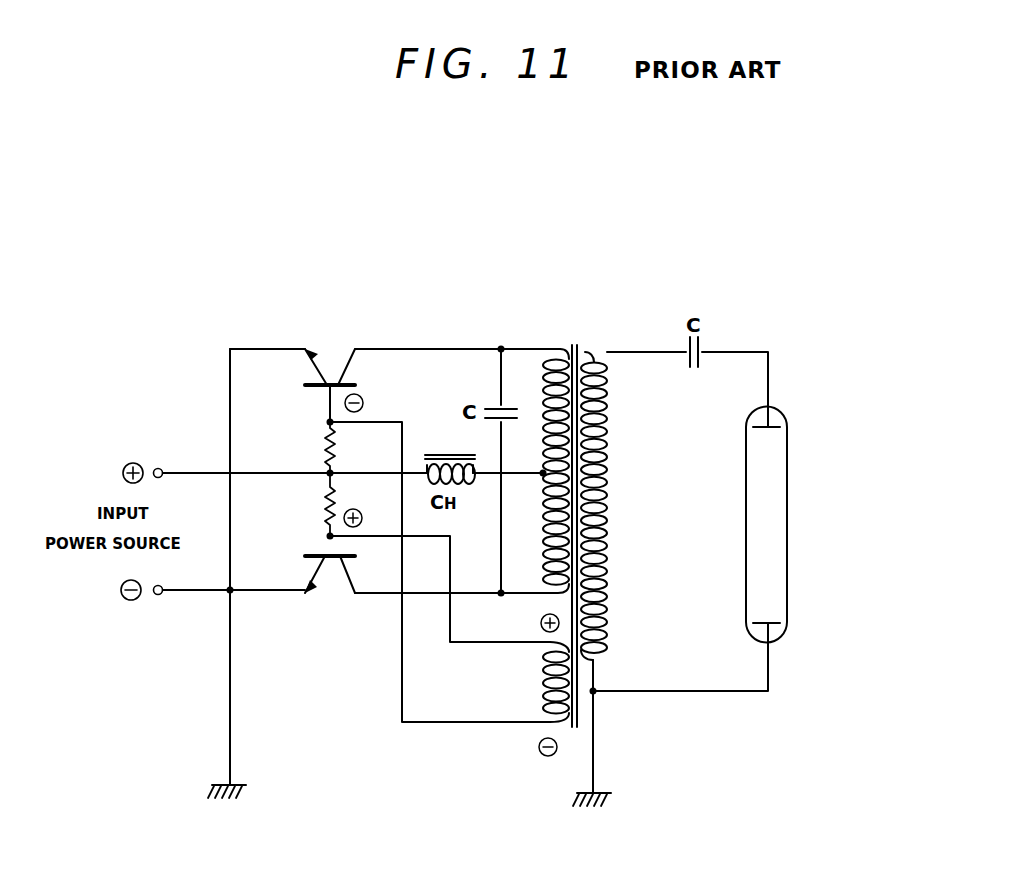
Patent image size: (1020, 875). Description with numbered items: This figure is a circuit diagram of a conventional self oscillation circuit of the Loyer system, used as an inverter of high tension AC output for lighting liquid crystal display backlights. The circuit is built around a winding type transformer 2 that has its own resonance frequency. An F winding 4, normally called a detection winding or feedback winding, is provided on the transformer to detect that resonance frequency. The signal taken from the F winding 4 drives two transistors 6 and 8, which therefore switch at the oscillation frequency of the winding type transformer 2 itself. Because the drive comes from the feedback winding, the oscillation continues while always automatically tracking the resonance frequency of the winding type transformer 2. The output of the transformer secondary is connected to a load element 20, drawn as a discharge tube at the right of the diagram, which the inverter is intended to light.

The winding type transformer 2 is at (578, 350).
The F winding 4 is at (545, 683).
The transistor 6 is at (346, 362).
The transistor 8 is at (345, 586).
The discharge lamp 20 is at (787, 505).